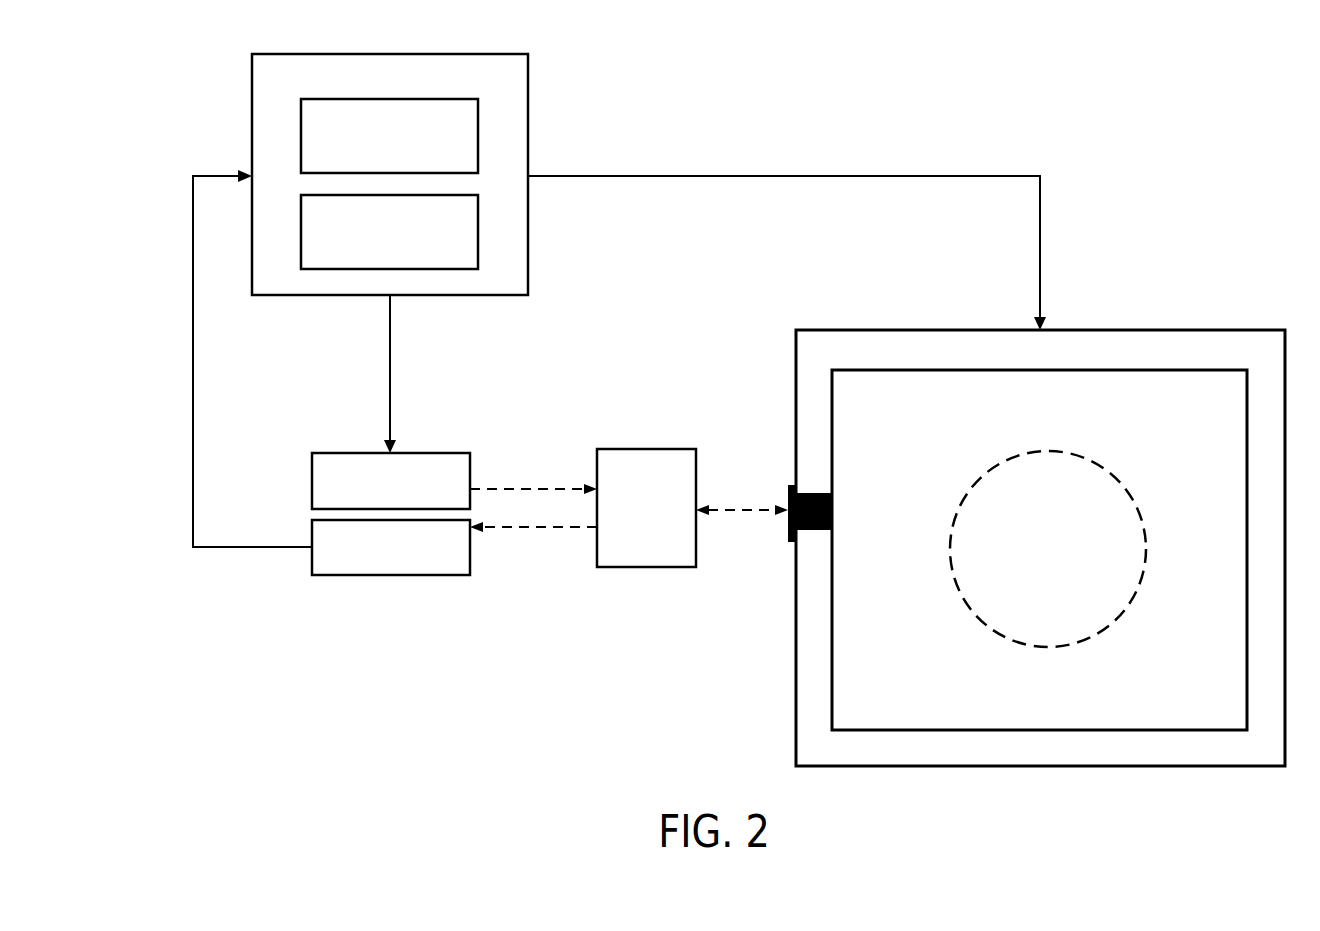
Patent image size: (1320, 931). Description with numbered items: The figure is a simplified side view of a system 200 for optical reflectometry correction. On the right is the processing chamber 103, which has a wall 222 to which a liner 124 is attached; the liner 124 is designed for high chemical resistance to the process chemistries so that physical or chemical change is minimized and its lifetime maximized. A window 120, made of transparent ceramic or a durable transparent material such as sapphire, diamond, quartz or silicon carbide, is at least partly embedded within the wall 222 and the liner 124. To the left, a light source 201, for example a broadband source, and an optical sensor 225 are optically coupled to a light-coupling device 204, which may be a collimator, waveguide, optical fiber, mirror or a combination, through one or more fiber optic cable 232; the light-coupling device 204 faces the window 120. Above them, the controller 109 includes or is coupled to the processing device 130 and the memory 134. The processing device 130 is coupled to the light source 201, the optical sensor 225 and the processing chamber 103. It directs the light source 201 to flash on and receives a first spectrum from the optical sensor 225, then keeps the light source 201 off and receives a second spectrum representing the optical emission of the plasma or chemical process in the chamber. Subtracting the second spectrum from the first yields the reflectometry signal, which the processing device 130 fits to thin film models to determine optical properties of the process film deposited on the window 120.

The system 200 is at (117, 46).
The controller 109 is at (374, 86).
The processing device 130 is at (374, 147).
The memory 134 is at (374, 244).
The light source 201 is at (372, 492).
The optical sensor 225 is at (372, 561).
The light-coupling device 204 is at (628, 531).
The fiber optic cable 232 is at (536, 455).
The wall 222 is at (807, 712).
The liner 124 is at (837, 672).
The processing chamber 103 is at (1190, 713).
The window 120 is at (832, 521).